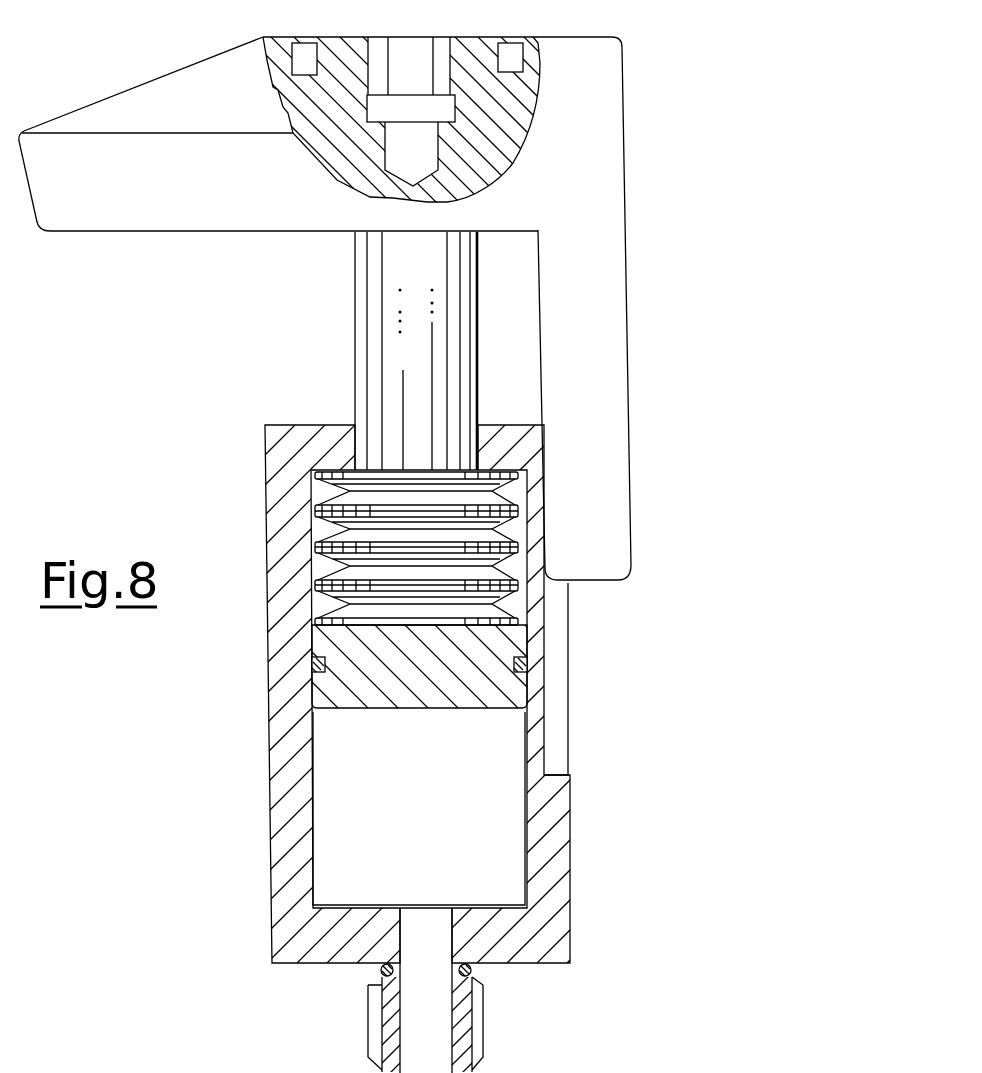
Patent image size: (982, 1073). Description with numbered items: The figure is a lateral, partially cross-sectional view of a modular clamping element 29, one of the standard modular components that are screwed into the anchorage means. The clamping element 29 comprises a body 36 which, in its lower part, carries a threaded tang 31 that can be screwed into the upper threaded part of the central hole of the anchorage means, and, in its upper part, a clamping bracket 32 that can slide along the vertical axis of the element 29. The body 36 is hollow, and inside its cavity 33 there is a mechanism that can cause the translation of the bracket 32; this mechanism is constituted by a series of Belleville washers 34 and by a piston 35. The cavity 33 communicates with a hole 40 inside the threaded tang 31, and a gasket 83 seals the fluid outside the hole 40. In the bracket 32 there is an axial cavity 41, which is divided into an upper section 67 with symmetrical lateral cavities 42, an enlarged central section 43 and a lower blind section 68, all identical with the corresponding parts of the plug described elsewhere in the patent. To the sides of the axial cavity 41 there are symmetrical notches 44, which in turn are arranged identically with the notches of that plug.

The clamping element 29 is at (572, 884).
The threaded tang 31 is at (463, 1000).
The clamping bracket 32 is at (153, 232).
The cavity 33 is at (498, 807).
The Belleville washers 34 is at (495, 572).
The piston 35 is at (507, 647).
The body 36 is at (288, 792).
The hole 40 is at (437, 1035).
The axial cavity 41 is at (396, 36).
The lateral cavities 42 is at (445, 77).
The enlarged central section 43 is at (443, 110).
The notches 44 is at (303, 52).
The upper section 67 is at (419, 47).
The lower blind section 68 is at (428, 152).
The gasket 83 is at (381, 971).